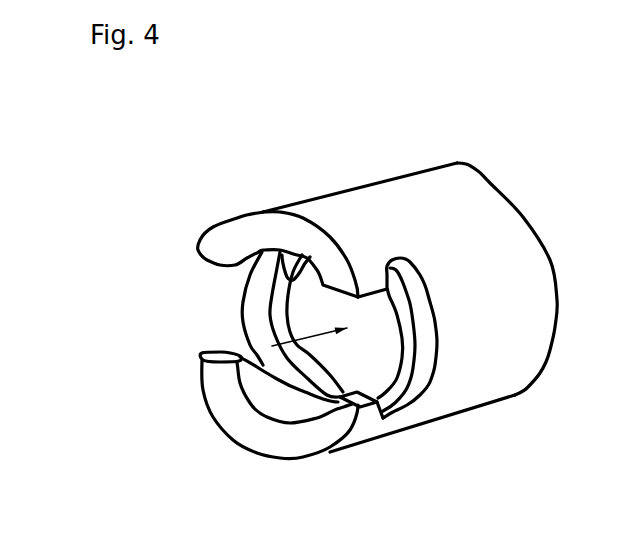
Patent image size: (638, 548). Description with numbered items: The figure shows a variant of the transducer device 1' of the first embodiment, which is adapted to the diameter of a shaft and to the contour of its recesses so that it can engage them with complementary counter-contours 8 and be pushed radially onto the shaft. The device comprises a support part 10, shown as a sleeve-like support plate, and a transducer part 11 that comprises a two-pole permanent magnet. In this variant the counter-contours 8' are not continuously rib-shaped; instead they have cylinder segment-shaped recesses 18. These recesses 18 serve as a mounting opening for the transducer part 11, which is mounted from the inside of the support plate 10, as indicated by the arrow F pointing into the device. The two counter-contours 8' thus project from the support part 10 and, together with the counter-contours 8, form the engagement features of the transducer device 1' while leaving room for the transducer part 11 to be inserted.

The transducer device 1' is at (357, 318).
The counter-contours 8 is at (433, 377).
The counter-contours 8' is at (246, 335).
The support part 10 is at (520, 367).
The transducer part 11 is at (323, 352).
The cylinder segment-shaped recesses 18 is at (283, 272).